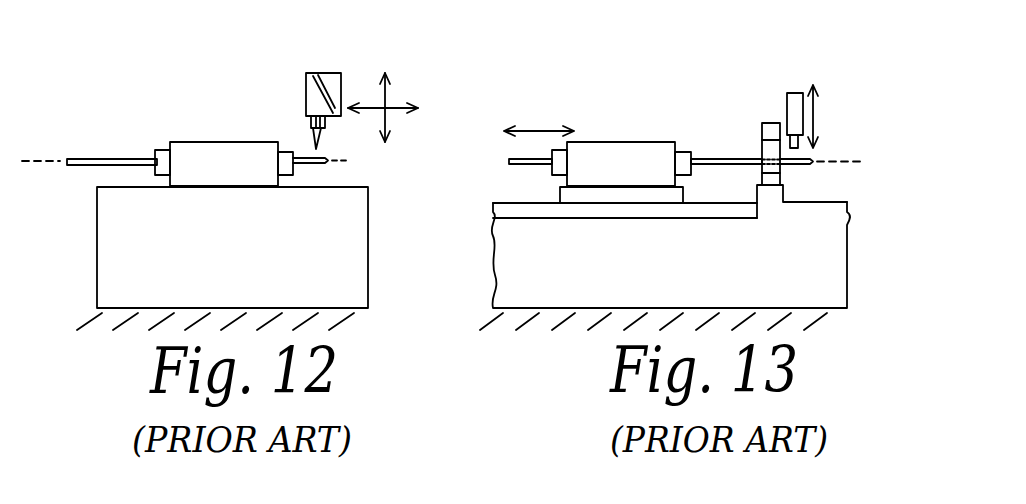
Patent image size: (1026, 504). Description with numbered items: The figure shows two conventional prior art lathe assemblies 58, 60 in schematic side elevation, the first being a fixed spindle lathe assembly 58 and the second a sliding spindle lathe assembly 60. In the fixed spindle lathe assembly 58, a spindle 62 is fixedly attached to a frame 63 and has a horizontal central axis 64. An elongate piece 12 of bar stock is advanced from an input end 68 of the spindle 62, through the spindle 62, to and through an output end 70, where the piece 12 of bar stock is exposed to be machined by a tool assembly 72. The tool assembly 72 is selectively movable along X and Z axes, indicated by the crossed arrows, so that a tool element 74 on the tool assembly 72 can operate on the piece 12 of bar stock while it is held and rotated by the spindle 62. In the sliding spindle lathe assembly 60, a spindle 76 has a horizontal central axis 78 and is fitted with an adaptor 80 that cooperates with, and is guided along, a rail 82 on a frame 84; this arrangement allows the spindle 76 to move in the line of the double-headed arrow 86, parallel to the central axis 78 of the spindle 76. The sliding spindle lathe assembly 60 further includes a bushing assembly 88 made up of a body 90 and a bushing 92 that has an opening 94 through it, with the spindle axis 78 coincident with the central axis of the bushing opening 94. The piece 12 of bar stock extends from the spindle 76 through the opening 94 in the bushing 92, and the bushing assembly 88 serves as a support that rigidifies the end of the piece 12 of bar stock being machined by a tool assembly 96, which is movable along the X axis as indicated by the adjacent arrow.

In FIG. 12, the piece of bar stock 12 is at (112, 158).
In FIG. 13, the piece of bar stock 12 is at (530, 165).
In FIG. 12, the lathe assembly 58 is at (241, 102).
In FIG. 13, the lathe assembly 60 is at (647, 125).
In FIG. 12, the spindle 62 is at (185, 141).
In FIG. 12, the frame 63 is at (240, 257).
In FIG. 12, the horizontal central axis 64 is at (50, 160).
In FIG. 12, the input end 68 is at (155, 169).
In FIG. 12, the output end 70 is at (295, 173).
In FIG. 12, the tool assembly 72 is at (344, 68).
In FIG. 12, the tool element 74 is at (315, 148).
In FIG. 13, the spindle 76 is at (598, 142).
In FIG. 13, the horizontal central axis 78 is at (867, 163).
In FIG. 13, the adaptor 80 is at (650, 193).
In FIG. 13, the rail 82 is at (522, 212).
In FIG. 13, the frame 84 is at (584, 277).
In FIG. 13, the double-headed arrow 86 is at (540, 128).
In FIG. 13, the bushing assembly 88 is at (756, 112).
In FIG. 13, the body 90 is at (762, 128).
In FIG. 13, the bushing 92 is at (762, 149).
In FIG. 13, the opening 94 is at (762, 168).
In FIG. 13, the tool assembly 96 is at (797, 88).